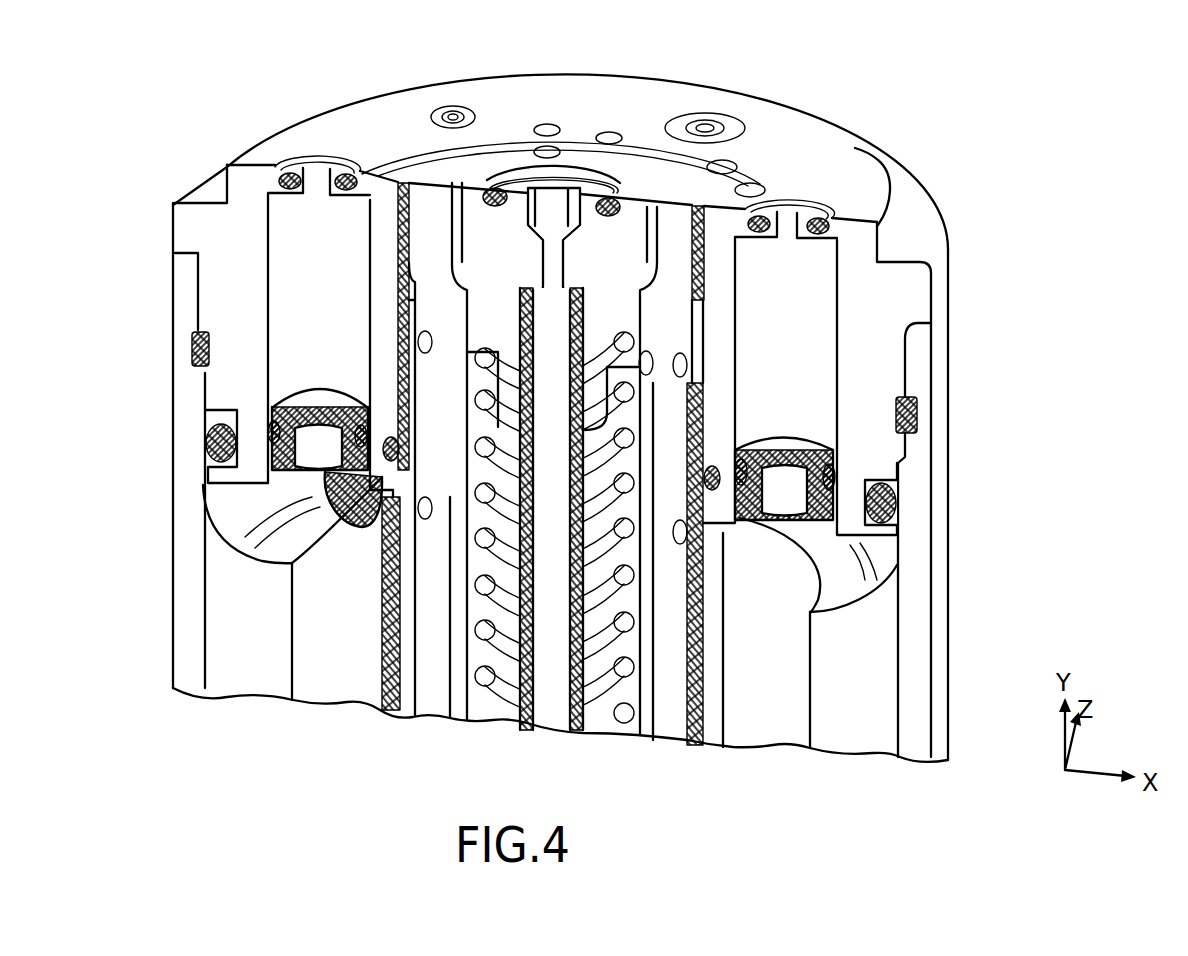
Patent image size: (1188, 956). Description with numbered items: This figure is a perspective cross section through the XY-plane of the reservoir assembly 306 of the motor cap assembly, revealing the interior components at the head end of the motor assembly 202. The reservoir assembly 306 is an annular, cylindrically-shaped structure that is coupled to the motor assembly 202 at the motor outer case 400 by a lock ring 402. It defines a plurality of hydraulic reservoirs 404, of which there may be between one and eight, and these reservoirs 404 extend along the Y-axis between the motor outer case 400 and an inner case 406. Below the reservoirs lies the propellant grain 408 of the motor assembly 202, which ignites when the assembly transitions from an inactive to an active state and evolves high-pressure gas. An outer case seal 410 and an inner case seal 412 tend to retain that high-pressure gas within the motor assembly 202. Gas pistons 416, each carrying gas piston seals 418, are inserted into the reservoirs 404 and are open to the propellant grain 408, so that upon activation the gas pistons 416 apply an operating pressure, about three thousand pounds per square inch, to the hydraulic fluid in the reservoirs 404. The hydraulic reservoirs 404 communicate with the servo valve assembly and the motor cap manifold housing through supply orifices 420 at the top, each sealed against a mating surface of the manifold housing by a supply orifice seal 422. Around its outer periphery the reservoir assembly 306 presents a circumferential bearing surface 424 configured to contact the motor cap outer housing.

The motor assembly 202 is at (962, 606).
The reservoir assembly 306 is at (866, 108).
The motor outer case 400 is at (185, 612).
The lock ring 402 is at (203, 345).
The hydraulic reservoirs 404 is at (336, 257).
The inner case 406 is at (408, 663).
The propellant grain 408 is at (266, 671).
The outer case seal 410 is at (887, 502).
The inner case seal 412 is at (403, 452).
The gas pistons 416 is at (330, 400).
The gas piston seals 418 is at (274, 423).
The supply orifices 420 is at (716, 128).
The supply orifice seal 422 is at (746, 125).
The circumferential bearing surface 424 is at (921, 212).